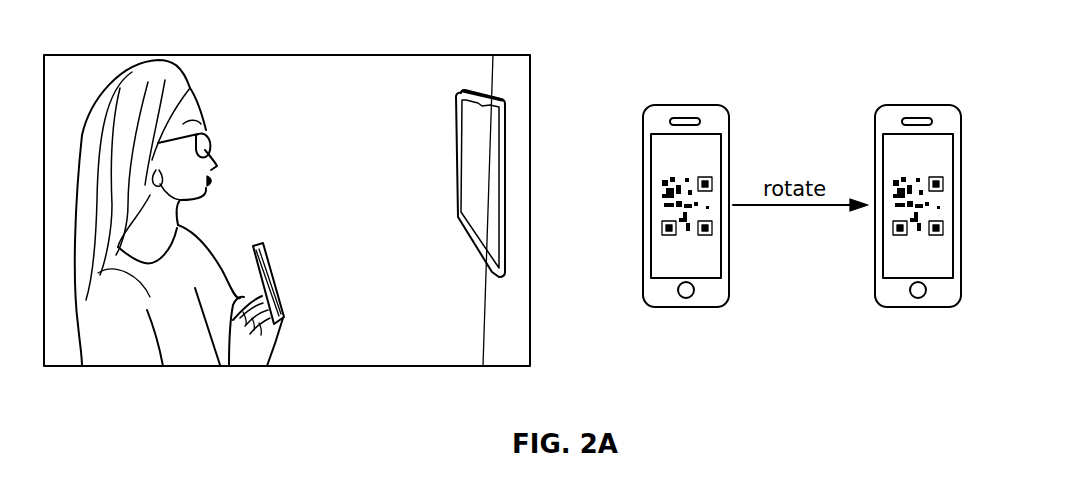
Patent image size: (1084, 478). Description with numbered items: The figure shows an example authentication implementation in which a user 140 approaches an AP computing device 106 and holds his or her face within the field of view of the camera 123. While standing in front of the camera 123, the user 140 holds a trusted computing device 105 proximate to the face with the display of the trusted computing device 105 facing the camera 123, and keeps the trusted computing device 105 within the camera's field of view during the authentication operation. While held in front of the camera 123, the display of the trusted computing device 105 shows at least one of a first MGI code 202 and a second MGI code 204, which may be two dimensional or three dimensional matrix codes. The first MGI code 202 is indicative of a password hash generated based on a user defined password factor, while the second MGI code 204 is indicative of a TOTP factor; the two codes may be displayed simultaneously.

The user 140 is at (182, 68).
The trusted computing device 105 is at (273, 278).
The AP computing device 106 is at (475, 121).
The camera 123 is at (477, 92).
The first MGI code 202 is at (662, 188).
The second MGI code 204 is at (893, 182).